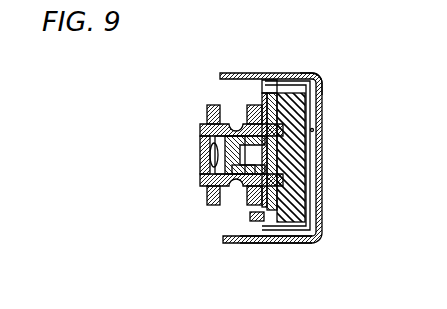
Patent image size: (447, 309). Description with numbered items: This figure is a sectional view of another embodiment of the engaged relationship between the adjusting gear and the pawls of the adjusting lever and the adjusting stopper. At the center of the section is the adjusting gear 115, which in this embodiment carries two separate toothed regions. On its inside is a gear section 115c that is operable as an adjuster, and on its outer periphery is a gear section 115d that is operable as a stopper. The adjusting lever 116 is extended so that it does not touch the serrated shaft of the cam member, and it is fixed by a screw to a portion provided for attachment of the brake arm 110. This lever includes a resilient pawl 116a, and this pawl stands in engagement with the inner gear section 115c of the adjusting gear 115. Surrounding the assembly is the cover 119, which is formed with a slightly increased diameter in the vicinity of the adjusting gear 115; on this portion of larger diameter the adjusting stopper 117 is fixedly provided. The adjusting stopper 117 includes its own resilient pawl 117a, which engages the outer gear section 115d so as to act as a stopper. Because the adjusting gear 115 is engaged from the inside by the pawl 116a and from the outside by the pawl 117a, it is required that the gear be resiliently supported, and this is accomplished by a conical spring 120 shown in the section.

The brake arm 110 is at (212, 112).
The adjusting gear 115 is at (312, 205).
The gear section 115c is at (258, 218).
The gear section 115d is at (314, 82).
The adjusting lever 116 is at (243, 100).
The resilient pawl 116a is at (262, 73).
The adjusting stopper 117 is at (272, 73).
The resilient pawl 117a is at (294, 74).
The cover 119 is at (305, 243).
The conical spring 120 is at (312, 137).